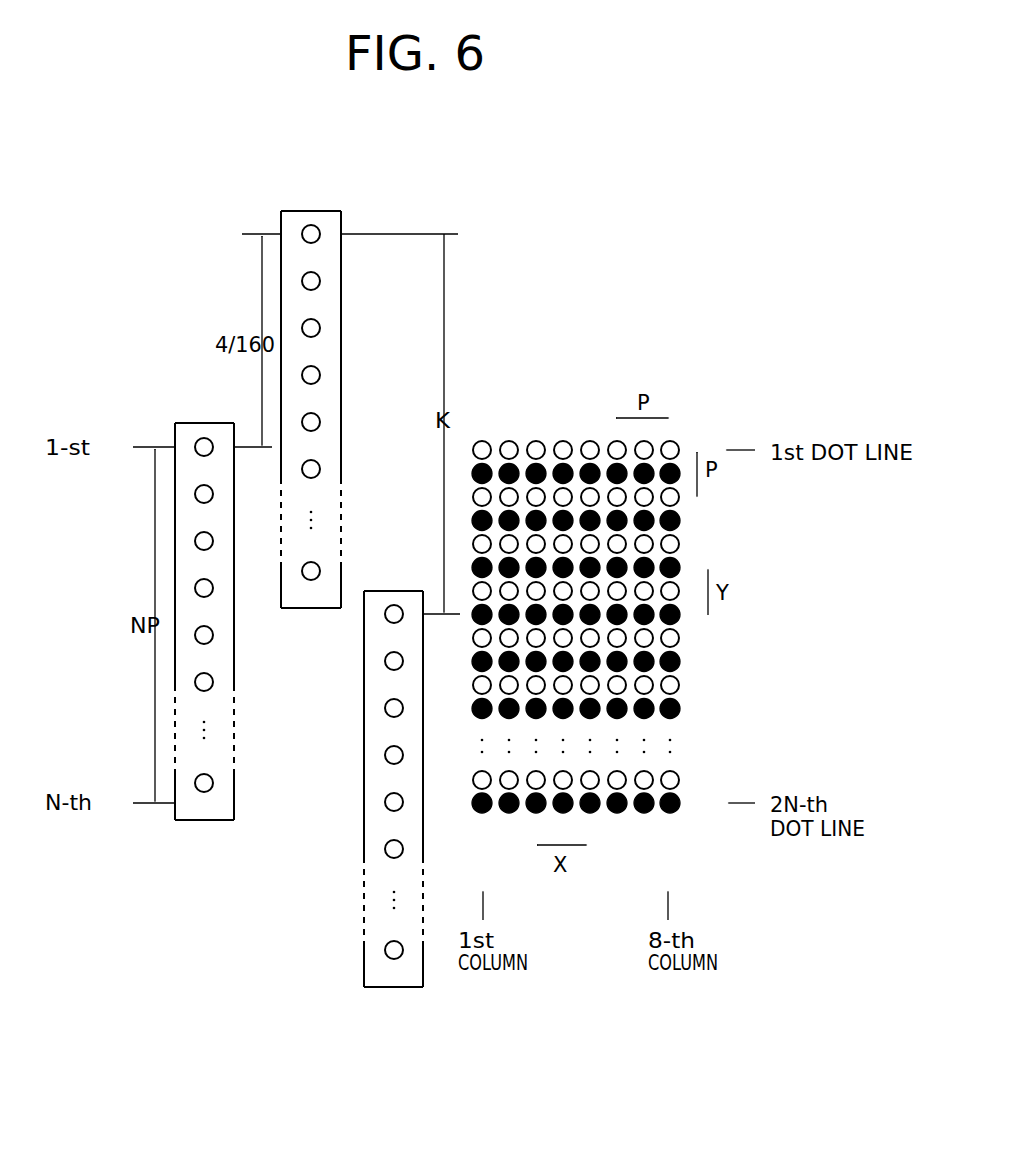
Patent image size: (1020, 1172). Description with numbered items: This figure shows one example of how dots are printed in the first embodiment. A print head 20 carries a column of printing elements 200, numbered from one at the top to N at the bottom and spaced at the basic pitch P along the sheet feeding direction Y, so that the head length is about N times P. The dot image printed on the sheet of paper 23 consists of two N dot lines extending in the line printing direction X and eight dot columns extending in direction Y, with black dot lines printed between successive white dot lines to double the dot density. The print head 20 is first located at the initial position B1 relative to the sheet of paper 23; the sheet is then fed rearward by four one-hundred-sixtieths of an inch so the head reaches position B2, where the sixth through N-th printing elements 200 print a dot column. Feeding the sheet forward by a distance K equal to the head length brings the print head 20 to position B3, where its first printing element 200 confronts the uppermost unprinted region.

The print head 20 is at (206, 641).
The printing elements 200 is at (214, 782).
The sheet of paper 23 is at (610, 318).
The initial position B1 is at (175, 434).
The position B2 is at (341, 268).
The position B3 is at (364, 677).